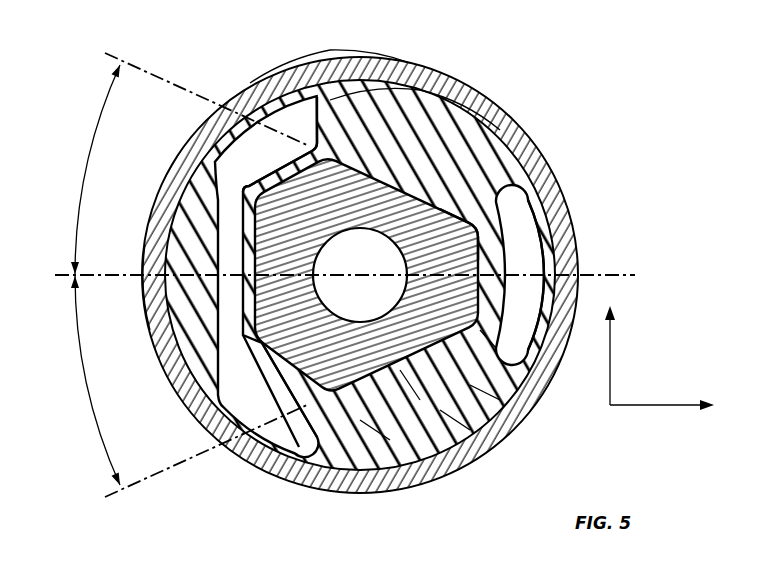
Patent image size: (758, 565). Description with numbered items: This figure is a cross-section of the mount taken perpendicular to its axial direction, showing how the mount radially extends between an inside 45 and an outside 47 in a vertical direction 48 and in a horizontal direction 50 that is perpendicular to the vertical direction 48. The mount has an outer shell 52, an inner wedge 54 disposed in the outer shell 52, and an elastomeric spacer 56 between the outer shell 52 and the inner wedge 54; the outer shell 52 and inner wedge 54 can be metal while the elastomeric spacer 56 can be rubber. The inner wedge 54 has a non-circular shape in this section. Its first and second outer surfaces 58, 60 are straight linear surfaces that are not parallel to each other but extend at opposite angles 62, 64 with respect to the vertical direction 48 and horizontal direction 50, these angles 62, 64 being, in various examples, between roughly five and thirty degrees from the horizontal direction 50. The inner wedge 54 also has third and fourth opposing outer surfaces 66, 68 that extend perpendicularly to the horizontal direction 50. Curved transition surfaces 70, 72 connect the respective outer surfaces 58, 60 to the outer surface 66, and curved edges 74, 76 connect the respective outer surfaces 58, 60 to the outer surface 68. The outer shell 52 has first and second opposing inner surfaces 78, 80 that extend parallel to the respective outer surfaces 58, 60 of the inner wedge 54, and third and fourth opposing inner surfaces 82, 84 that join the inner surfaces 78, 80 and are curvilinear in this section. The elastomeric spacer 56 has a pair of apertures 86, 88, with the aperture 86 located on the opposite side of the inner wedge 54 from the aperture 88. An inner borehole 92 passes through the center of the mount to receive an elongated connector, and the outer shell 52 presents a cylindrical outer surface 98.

The inside 45 is at (395, 232).
The outside 47 is at (512, 100).
The vertical direction 48 is at (611, 364).
The horizontal direction 50 is at (660, 420).
The outer shell 52 is at (288, 62).
The inner wedge 54 is at (497, 383).
The elastomeric spacer 56 is at (373, 434).
The first outer surface 58 is at (370, 97).
The second outer surface 60 is at (410, 380).
The angle 62 is at (115, 168).
The angle 64 is at (112, 392).
The third outer surface 66 is at (245, 235).
The fourth outer surface 68 is at (507, 240).
The curved transition surface 70 is at (290, 172).
The curved transition surface 72 is at (264, 374).
The curved edge 74 is at (479, 228).
The curved edge 76 is at (515, 365).
The first inner surface 78 is at (437, 113).
The second inner surface 80 is at (447, 417).
The third inner surface 82 is at (170, 298).
The fourth inner surface 84 is at (548, 257).
The aperture 86 is at (258, 403).
The aperture 88 is at (535, 290).
The inner borehole 92 is at (350, 309).
The cylindrical outer surface 98 is at (372, 54).